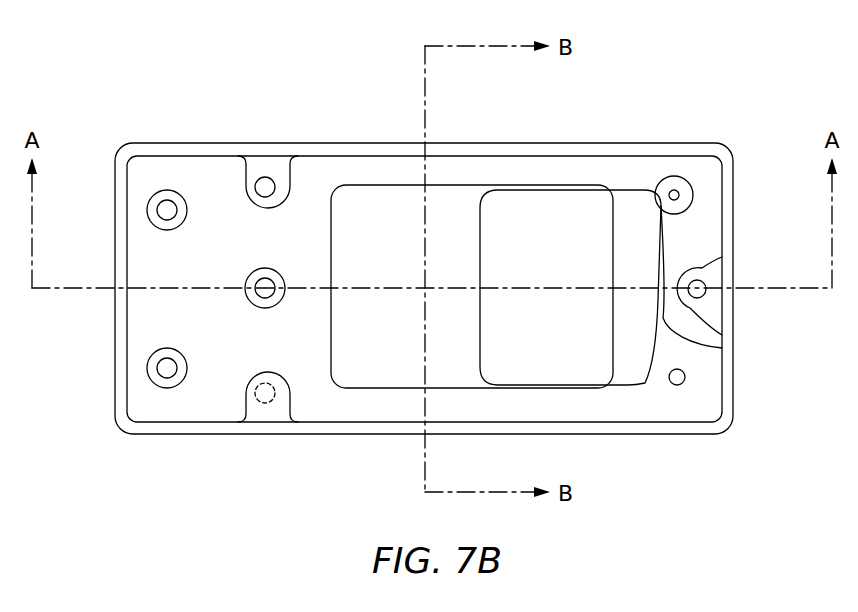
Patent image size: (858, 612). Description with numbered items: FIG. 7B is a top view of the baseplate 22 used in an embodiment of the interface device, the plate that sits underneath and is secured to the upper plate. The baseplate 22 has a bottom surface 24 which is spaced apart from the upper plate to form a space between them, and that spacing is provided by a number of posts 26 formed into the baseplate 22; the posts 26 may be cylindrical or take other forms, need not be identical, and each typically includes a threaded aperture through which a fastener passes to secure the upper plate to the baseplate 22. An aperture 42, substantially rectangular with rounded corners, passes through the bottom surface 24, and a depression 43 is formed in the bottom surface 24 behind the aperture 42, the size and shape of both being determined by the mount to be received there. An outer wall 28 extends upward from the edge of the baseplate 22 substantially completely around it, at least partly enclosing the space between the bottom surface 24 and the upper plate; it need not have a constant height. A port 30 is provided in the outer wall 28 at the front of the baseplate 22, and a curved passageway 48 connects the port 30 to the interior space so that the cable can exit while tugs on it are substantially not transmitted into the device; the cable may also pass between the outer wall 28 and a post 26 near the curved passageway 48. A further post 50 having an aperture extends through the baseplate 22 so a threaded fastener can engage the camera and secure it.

The baseplate 22 is at (686, 112).
The bottom surface 24 is at (207, 187).
The posts 26 is at (265, 190).
The outer wall 28 is at (336, 160).
The port 30 is at (730, 340).
The aperture 42 is at (570, 222).
The depression 43 is at (372, 372).
The curved passageway 48 is at (724, 334).
The posts 50 is at (270, 272).